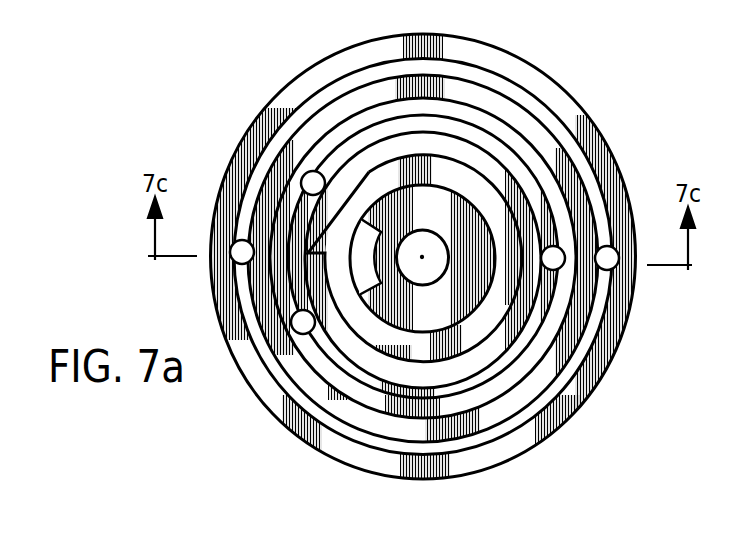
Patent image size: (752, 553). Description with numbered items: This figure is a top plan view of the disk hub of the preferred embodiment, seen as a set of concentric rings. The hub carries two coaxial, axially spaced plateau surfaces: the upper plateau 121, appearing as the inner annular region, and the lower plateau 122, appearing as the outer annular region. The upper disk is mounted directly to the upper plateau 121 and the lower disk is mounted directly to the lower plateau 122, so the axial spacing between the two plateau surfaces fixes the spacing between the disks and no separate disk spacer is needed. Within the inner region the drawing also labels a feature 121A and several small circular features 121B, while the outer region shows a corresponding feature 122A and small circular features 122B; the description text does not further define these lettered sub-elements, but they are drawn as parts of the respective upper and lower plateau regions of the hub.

The upper plateau 121 is at (287, 279).
The pointer ring of inner disc 121A is at (520, 346).
The holes in inner disc 121B is at (313, 183).
The lower plateau 122 is at (253, 378).
The inner edge of outer ring 122A is at (547, 403).
The holes in outer ring 122B is at (242, 252).